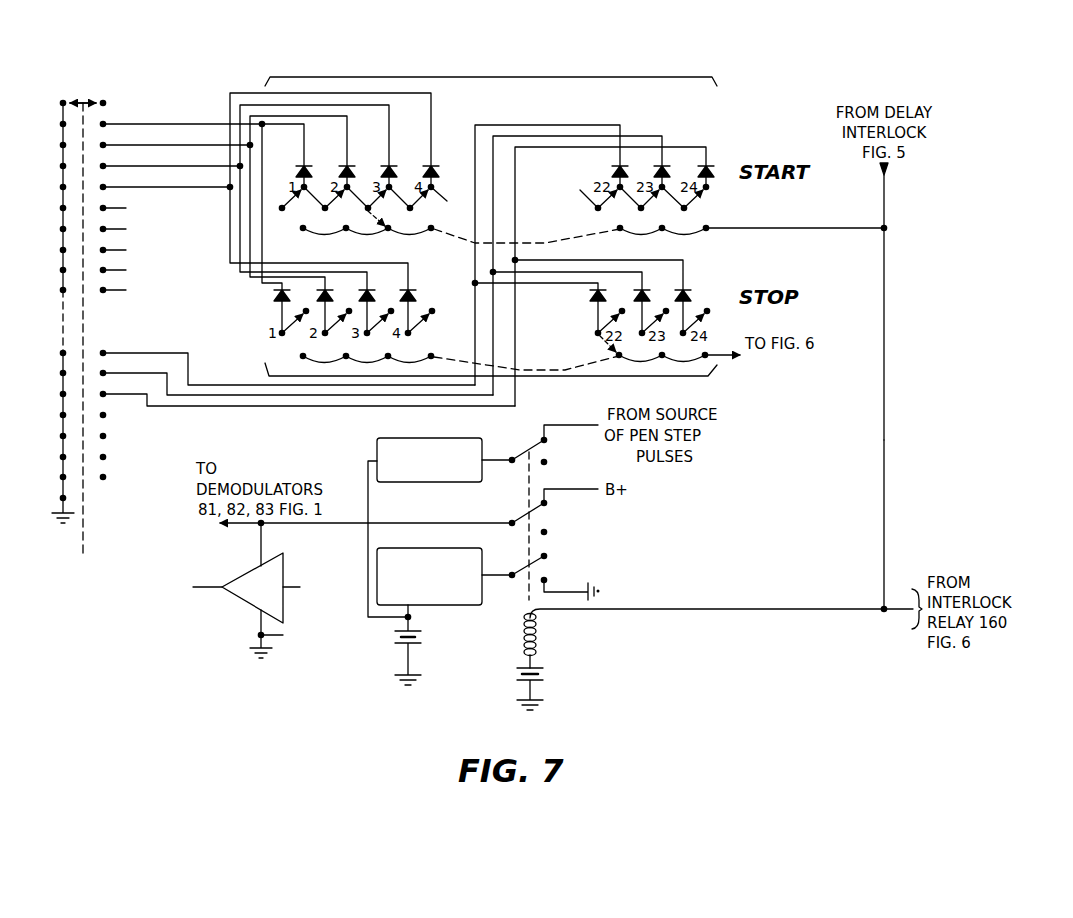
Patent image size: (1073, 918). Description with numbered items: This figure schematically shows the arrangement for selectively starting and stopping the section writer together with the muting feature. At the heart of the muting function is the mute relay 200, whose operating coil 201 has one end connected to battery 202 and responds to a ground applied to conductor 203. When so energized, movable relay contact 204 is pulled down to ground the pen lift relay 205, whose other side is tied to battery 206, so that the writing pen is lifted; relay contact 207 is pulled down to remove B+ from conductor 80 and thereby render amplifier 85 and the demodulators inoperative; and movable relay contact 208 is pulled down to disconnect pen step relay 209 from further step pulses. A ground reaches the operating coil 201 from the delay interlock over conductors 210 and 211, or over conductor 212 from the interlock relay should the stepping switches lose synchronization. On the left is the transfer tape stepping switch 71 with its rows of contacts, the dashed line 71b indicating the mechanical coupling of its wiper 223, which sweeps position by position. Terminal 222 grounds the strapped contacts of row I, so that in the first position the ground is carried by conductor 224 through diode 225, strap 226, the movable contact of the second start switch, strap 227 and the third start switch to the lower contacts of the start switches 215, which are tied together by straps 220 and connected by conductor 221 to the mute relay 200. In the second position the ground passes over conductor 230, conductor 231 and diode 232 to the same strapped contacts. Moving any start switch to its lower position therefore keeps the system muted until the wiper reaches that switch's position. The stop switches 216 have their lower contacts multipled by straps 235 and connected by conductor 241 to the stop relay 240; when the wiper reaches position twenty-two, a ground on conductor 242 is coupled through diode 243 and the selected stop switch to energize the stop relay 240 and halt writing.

The transfer tape stepping switch 71 is at (116, 76).
The switch wiper / mechanical link 71b is at (83, 541).
The wiper 223 is at (106, 99).
The terminal 222 is at (60, 498).
The conductor 224 is at (138, 124).
The conductor 230 is at (148, 145).
The conductor 231 is at (348, 122).
The start switches 215 is at (449, 77).
The diode 225 is at (309, 172).
The diode 232 is at (351, 172).
The strap 226 is at (302, 207).
The strap 227 is at (359, 218).
The straps 220 is at (381, 251).
The conductor 221 is at (772, 228).
The conductor 210 is at (886, 192).
The conductor 211 is at (884, 440).
The conductor 212 is at (896, 608).
The straps 235 is at (372, 361).
The stop switches 216 is at (567, 377).
The conductor 242 is at (196, 386).
The diode 243 is at (593, 298).
The conductor 241 is at (718, 350).
The stop relay 240 is at (800, 375).
The conductor 80 is at (428, 521).
The amplifier 85 is at (283, 561).
The pen step relay 209 is at (398, 437).
The pen lift relay 205 is at (432, 607).
The battery 206 is at (393, 643).
The movable relay contact 208 is at (544, 452).
The relay contact 207 is at (544, 515).
The movable relay contact 204 is at (548, 560).
The conductor 203 is at (657, 608).
The mute relay 200 is at (604, 674).
The operating coil 201 is at (525, 638).
The battery 202 is at (547, 683).